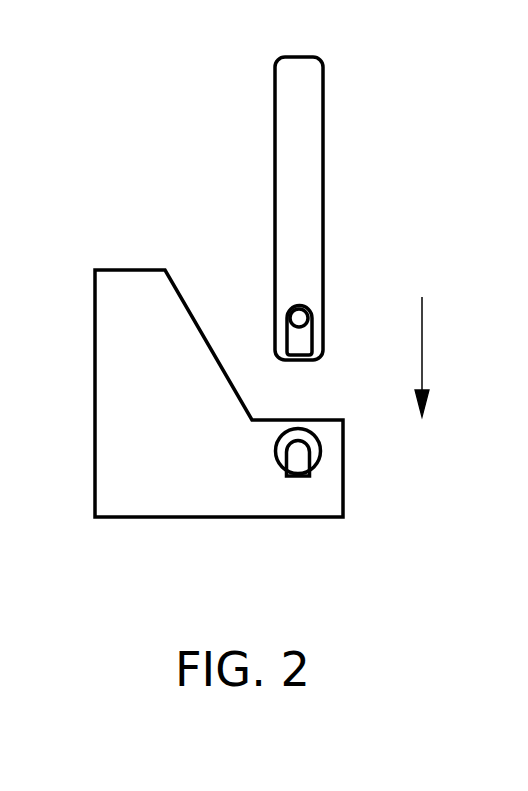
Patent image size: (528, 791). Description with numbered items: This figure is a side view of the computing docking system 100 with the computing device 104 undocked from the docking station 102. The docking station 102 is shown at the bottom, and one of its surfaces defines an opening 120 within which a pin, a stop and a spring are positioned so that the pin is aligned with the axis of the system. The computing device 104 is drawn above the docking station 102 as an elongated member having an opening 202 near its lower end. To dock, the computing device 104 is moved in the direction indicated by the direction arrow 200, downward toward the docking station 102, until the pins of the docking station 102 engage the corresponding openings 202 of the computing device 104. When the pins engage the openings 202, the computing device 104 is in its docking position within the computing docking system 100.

The computing docking system 100 is at (128, 167).
The docking station 102 is at (140, 518).
The computing device 104 is at (273, 108).
The opening 120 is at (321, 452).
The direction arrow 200 is at (424, 335).
The opening 202 is at (325, 313).